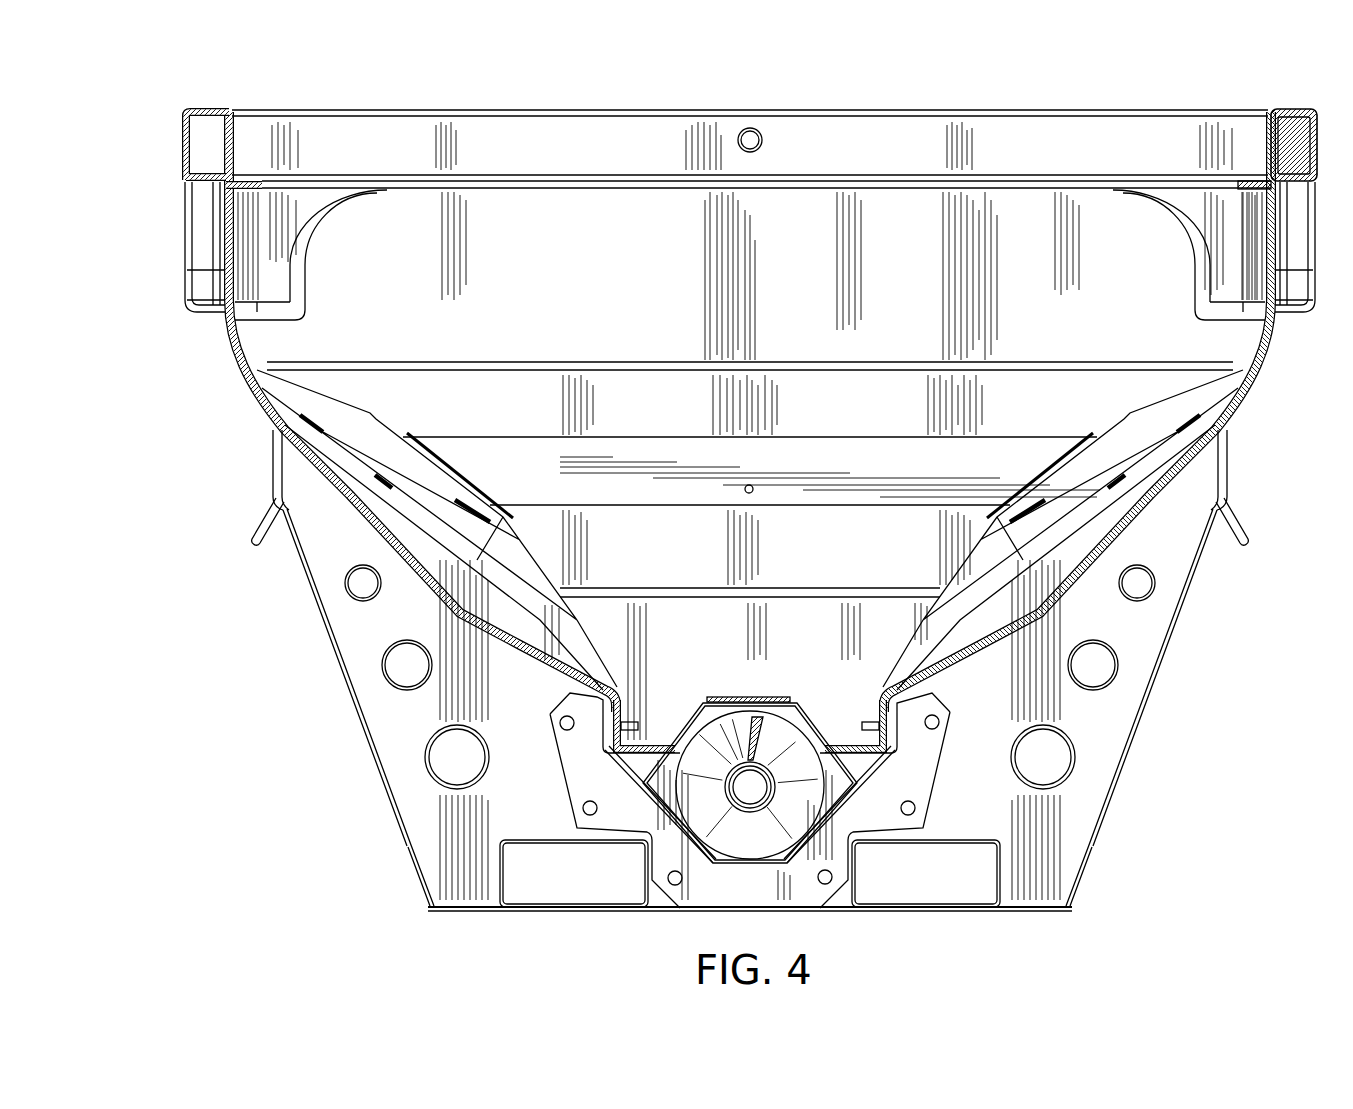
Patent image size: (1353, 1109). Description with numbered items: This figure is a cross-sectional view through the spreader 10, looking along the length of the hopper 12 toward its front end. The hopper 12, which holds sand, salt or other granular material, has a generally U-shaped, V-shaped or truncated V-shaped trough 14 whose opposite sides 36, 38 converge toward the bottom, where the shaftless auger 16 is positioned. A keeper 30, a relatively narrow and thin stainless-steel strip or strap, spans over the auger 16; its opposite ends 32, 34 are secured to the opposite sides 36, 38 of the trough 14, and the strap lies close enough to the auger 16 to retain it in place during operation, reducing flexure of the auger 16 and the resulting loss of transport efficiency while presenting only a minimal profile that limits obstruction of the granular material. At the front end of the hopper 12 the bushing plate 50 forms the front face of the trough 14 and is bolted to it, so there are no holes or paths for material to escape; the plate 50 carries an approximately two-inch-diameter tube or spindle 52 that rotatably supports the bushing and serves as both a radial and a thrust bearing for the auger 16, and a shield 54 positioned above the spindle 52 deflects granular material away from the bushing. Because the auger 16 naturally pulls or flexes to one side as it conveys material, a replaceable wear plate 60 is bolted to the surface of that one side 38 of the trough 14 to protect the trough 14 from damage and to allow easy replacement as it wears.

The spreader 10 is at (133, 132).
The hopper 12 is at (1068, 108).
The trough 14 is at (713, 866).
The shaftless auger 16 is at (707, 737).
The keeper 30 is at (741, 703).
The first end of keeper 32 is at (645, 797).
The second end of keeper 34 is at (855, 794).
The first side of trough 36 is at (640, 762).
The second side of trough 38 is at (862, 762).
The bushing plate 50 is at (573, 744).
The spindle 52 is at (757, 798).
The shield 54 is at (795, 712).
The wear plate 60 is at (822, 808).